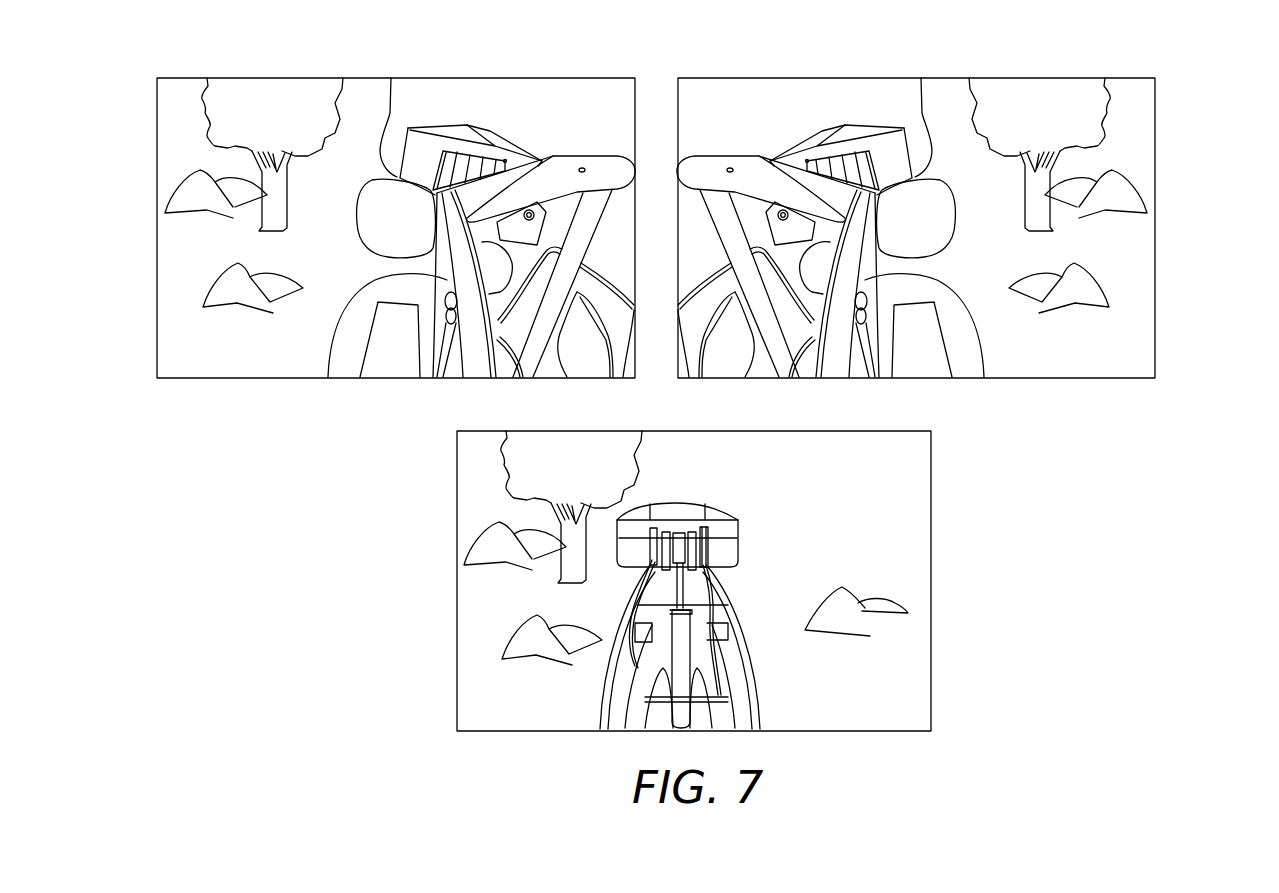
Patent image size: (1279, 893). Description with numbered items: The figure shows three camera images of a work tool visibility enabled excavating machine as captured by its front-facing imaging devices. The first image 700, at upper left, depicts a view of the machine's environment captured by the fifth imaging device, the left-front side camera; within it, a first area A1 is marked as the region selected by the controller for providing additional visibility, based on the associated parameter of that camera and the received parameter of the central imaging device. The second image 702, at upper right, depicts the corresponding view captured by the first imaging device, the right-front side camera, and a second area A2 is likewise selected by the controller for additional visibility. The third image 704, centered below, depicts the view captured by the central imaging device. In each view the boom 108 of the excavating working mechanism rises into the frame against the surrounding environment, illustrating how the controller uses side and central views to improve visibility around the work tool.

The first image 700 is at (138, 91).
The second image 702 is at (1186, 99).
The third image 704 is at (958, 472).
The boom 108 is at (327, 378).
The first area A1 is at (391, 78).
The second area A2 is at (921, 78).